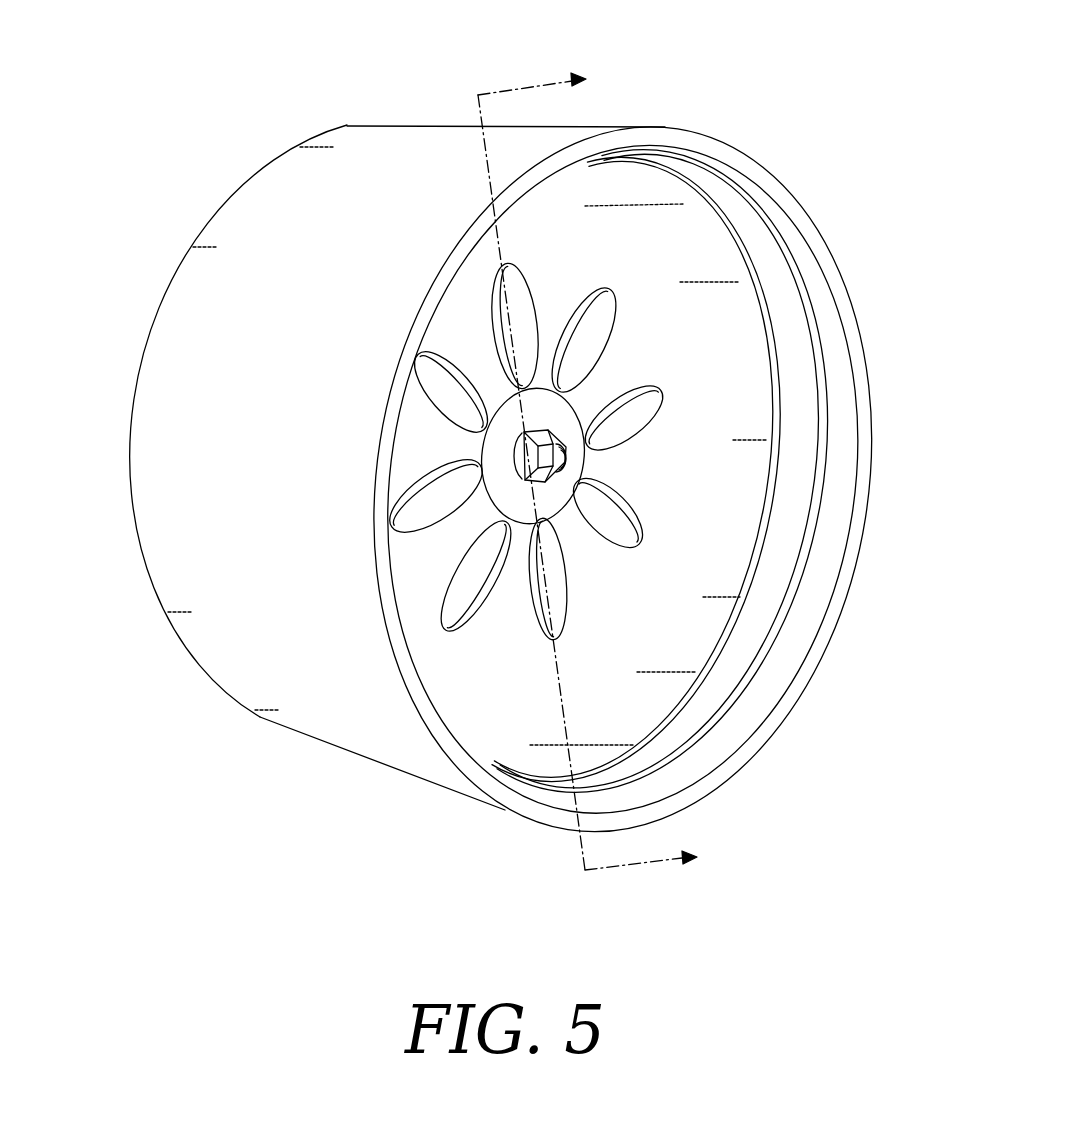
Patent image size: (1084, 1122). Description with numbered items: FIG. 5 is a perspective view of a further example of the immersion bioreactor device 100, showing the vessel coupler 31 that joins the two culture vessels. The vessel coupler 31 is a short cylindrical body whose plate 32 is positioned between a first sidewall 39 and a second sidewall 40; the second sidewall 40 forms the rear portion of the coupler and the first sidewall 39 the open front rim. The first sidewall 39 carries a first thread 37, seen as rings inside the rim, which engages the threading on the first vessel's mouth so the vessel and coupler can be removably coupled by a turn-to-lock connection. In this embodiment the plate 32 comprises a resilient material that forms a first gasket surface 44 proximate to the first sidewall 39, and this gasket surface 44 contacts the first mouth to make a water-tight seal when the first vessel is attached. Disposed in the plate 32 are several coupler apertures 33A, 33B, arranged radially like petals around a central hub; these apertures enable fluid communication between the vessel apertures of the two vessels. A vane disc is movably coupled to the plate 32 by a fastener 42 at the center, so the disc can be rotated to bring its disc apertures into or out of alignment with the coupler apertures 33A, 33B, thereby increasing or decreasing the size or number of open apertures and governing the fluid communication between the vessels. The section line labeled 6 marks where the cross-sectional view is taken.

The immersion bioreactor device 100 is at (357, 72).
The second sidewall 40 is at (212, 627).
The vessel coupler 31 is at (648, 127).
The plate 32 is at (420, 433).
The first sidewall 39 is at (787, 331).
The first thread 37 is at (822, 405).
The first gasket surface 44 is at (740, 534).
The coupler aperture 33A is at (517, 298).
The coupler aperture 33B is at (557, 593).
The fastener 42 is at (562, 466).
The section line 6- 6 is at (598, 466).